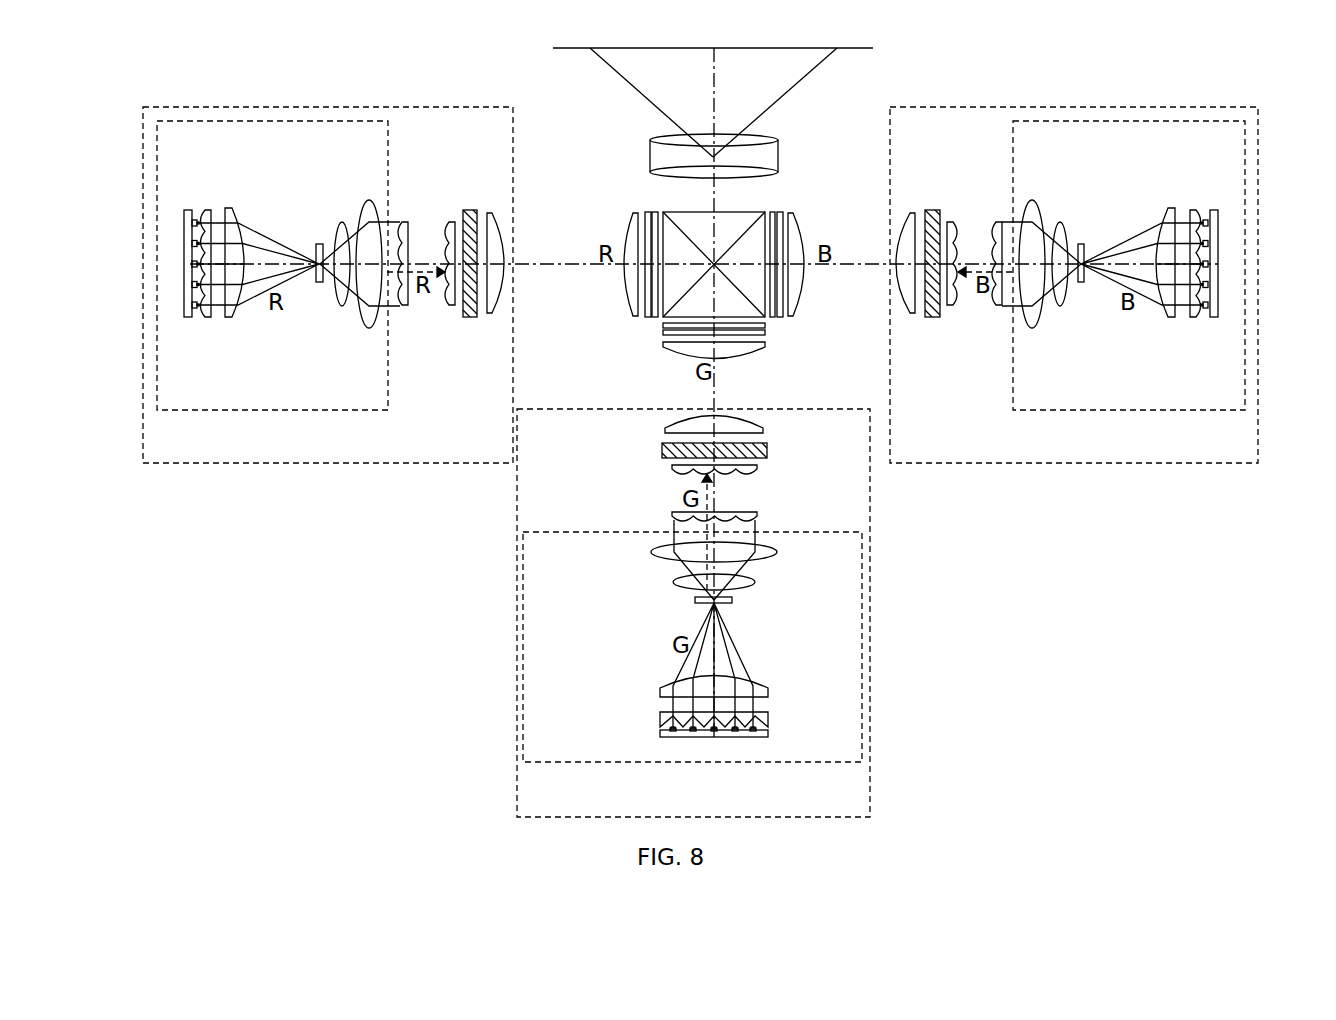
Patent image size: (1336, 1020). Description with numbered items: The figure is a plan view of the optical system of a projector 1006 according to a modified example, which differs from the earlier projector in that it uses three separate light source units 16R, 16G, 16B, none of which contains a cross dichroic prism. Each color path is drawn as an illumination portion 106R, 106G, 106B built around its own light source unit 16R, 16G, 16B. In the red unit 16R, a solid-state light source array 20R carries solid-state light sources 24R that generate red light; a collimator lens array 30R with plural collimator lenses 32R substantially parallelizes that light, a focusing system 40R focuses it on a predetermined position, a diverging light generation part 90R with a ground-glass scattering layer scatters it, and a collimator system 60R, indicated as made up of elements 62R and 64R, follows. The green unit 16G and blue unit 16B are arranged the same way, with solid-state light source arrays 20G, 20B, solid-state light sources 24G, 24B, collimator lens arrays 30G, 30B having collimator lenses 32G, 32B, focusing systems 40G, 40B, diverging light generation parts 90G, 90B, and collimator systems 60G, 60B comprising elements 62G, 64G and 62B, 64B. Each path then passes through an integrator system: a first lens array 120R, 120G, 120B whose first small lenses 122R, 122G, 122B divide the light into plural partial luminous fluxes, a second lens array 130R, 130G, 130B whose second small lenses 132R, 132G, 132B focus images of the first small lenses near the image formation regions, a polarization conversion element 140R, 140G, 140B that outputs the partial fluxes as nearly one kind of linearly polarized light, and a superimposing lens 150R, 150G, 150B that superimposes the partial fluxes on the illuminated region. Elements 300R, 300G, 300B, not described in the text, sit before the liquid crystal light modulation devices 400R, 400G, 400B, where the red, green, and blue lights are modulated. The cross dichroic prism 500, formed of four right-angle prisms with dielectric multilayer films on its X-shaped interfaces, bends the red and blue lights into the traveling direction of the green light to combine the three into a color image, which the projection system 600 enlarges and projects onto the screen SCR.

The projector 1006 is at (1035, 64).
The screen SCR is at (865, 50).
The projection system 600 is at (650, 158).
The cross dichroic prism 500 is at (755, 212).
The red field lens 300R is at (635, 213).
The green field lens 300G is at (663, 350).
The blue field lens 300B is at (795, 212).
The liquid crystal light modulation device 400R is at (648, 210).
The liquid crystal light modulation device 400G is at (663, 325).
The liquid crystal light modulation device 400B is at (775, 212).
The red illumination device 106R is at (193, 465).
The green illumination device 106G is at (872, 780).
The blue illumination device 106B is at (1212, 465).
The light source unit 16R is at (193, 412).
The light source unit 16G is at (805, 764).
The light source unit 16B is at (1210, 412).
The solid-state light source array 20R is at (187, 204).
The solid-state light source array 20G is at (778, 731).
The solid-state light source array 20B is at (1214, 204).
The solid-state light source 24R is at (196, 314).
The solid-state light source 24G is at (668, 731).
The solid-state light source 24B is at (1206, 314).
The collimator lens array 30R is at (203, 204).
The collimator lens array 30G is at (778, 712).
The collimator lens array 30B is at (1193, 204).
The collimator lens 32R is at (200, 310).
The collimator lens 32G is at (668, 727).
The collimator lens 32B is at (1203, 310).
The focusing system 40R is at (233, 206).
The focusing system 40G is at (770, 694).
The focusing system 40B is at (1170, 206).
The collimator system 60R is at (332, 304).
The collimator system 60G is at (651, 571).
The collimator system 60B is at (1071, 304).
The red first lens 62R is at (343, 307).
The green first lens 62G is at (680, 582).
The blue first lens 62B is at (1062, 306).
The red second lens 64R is at (370, 329).
The green second lens 64G is at (662, 552).
The blue second lens 64B is at (1033, 329).
The diverging light generation part 90R is at (320, 243).
The diverging light generation part 90G is at (735, 600).
The diverging light generation part 90B is at (1081, 243).
The first lens array 120R is at (420, 213).
The first lens array 120G is at (757, 514).
The first lens array 120B is at (997, 222).
The first small lens 122R is at (405, 308).
The first small lens 122G is at (672, 516).
The first small lens 122B is at (997, 308).
The second lens array 130R is at (451, 222).
The second lens array 130G is at (757, 468).
The second lens array 130B is at (950, 222).
The second small lens 132R is at (450, 306).
The second small lens 132G is at (672, 470).
The second small lens 132B is at (950, 307).
The polarization conversion element 140R is at (468, 210).
The polarization conversion element 140G is at (767, 449).
The polarization conversion element 140B is at (933, 210).
The superimposing lens 150R is at (497, 213).
The superimposing lens 150G is at (765, 430).
The superimposing lens 150B is at (911, 212).